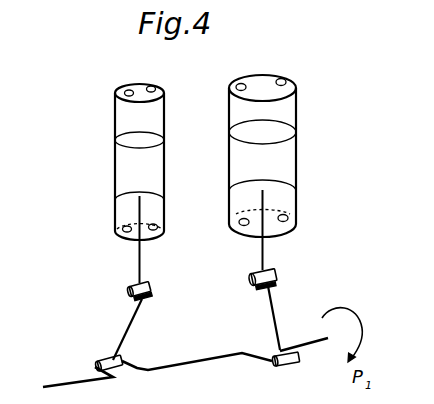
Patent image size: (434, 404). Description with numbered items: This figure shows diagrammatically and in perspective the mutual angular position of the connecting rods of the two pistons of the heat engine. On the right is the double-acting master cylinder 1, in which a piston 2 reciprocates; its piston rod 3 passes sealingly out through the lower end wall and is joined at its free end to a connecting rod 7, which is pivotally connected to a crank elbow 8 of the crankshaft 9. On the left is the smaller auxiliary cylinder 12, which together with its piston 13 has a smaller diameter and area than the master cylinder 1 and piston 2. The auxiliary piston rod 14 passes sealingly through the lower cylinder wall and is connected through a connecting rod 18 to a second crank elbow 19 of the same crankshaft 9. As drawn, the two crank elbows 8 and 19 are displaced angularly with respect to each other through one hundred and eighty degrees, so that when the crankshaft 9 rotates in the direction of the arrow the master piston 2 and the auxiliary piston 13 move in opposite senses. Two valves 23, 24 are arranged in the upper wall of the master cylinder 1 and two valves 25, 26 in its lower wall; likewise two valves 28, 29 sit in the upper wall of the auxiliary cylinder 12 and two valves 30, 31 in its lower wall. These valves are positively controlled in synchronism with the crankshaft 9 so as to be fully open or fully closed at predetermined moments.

The master cylinder 1 is at (296, 108).
The piston 2 is at (290, 152).
The piston rod 3 is at (268, 256).
The connecting rod 7 is at (277, 308).
The crank elbow 8 is at (262, 368).
The crankshaft 9 is at (67, 381).
The auxiliary cylinder 12 is at (115, 112).
The piston 13 is at (131, 159).
The piston rod 14 is at (139, 263).
The connecting rod 18 is at (128, 316).
The second crank elbow 19 is at (127, 363).
The valve 23 is at (285, 79).
The valve 24 is at (241, 83).
The valve 25 is at (241, 223).
The valve 26 is at (288, 219).
The valve 28 is at (155, 87).
The valve 29 is at (126, 89).
The valve 30 is at (124, 229).
The valve 31 is at (157, 227).